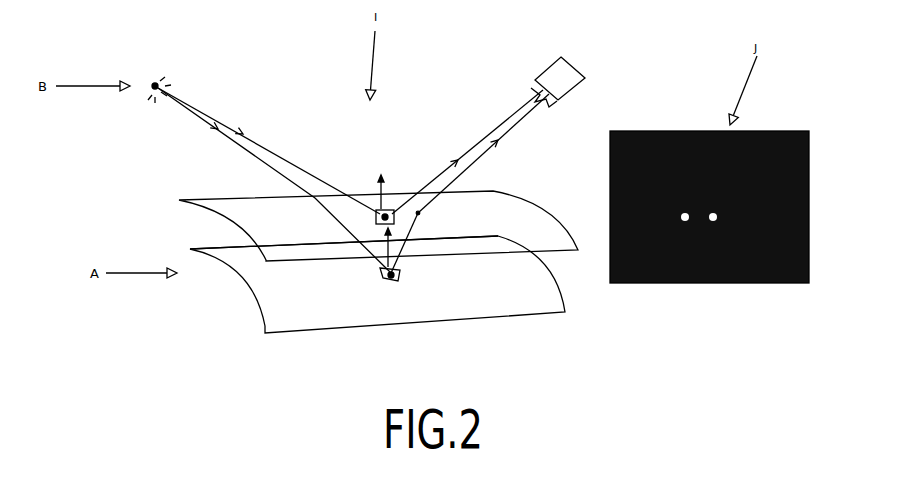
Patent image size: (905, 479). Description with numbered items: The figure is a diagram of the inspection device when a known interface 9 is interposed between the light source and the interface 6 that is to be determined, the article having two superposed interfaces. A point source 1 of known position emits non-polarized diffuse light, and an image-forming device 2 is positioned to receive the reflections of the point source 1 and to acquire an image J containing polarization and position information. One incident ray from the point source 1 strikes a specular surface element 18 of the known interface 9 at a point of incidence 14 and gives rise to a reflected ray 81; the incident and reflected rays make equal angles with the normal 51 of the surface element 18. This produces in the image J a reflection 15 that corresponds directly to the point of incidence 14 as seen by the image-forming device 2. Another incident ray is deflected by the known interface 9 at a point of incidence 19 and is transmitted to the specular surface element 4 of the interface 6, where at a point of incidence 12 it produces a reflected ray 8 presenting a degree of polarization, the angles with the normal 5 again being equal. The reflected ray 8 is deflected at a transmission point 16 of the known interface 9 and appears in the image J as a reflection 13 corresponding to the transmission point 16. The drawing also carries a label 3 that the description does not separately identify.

The point source 1 is at (145, 75).
The image-forming device 2 is at (540, 63).
The beam reflected from first surface 3 is at (497, 123).
The specular surface element 4 is at (387, 279).
The normal 5 is at (364, 241).
The normal 51 is at (371, 183).
The interface to be determined 6 is at (278, 326).
The reflected ray 8 is at (393, 253).
The reflected ray 81 is at (435, 163).
The known interface 9 is at (186, 199).
The point of incidence 12 is at (373, 270).
The reflection 13 is at (703, 205).
The point of incidence 14 is at (367, 209).
The reflection 15 is at (675, 205).
The transmission point 16 is at (412, 205).
The specular surface element 18 is at (384, 202).
The point of incidence 19 is at (338, 212).